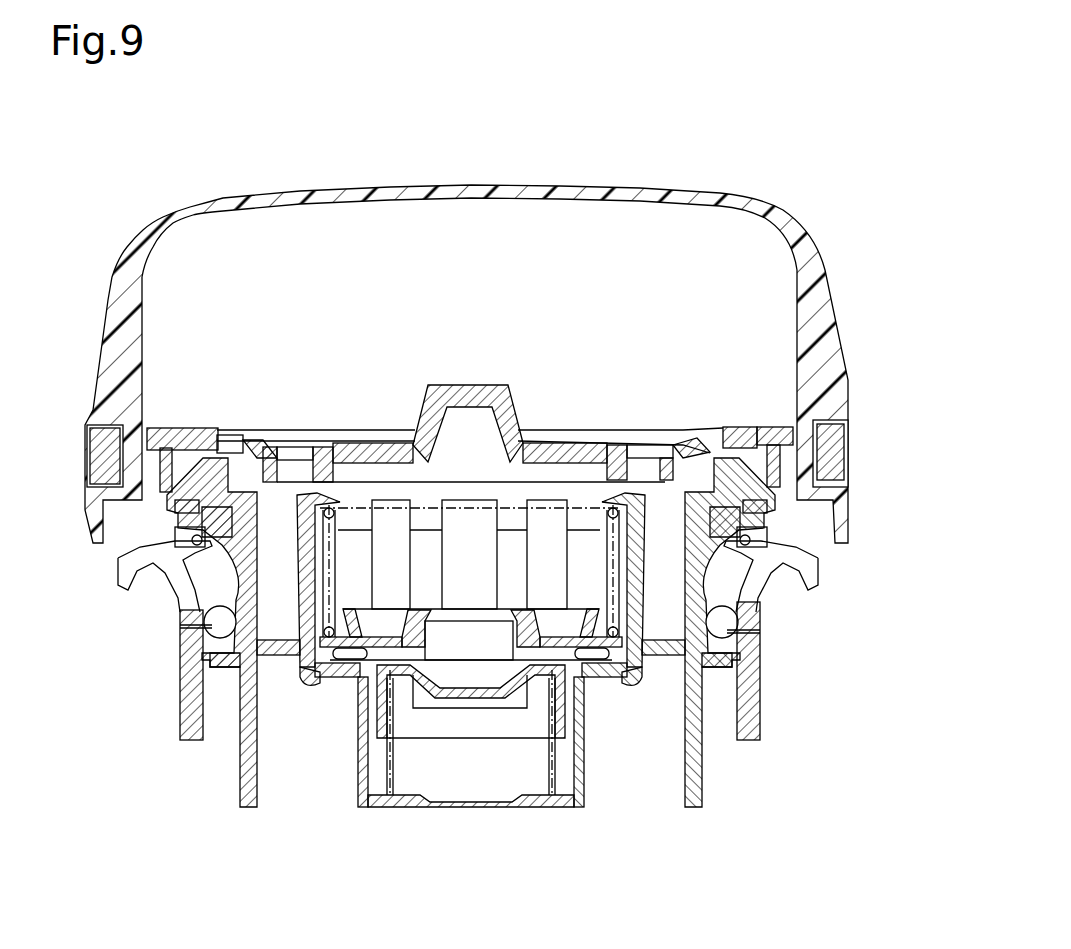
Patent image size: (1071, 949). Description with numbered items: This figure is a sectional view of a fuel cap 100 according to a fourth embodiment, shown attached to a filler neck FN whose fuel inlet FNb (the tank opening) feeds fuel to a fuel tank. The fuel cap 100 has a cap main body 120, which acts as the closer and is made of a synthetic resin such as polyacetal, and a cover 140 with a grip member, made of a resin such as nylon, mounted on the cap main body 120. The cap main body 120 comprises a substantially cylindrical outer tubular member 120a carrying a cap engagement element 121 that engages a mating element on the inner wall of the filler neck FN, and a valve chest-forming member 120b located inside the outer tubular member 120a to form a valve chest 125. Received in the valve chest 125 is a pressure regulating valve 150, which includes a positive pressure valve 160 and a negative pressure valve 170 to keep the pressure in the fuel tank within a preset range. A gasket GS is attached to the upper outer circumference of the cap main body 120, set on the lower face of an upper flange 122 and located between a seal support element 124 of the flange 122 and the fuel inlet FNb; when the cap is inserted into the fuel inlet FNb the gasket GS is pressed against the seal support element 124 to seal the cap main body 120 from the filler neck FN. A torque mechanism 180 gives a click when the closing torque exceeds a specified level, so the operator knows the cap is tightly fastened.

The cap assembly 100 is at (805, 134).
The cover 140 is at (783, 212).
The torque mechanism 180 is at (682, 432).
The upper flange 122 is at (745, 500).
The seal support element 124 is at (740, 528).
The gasket GS is at (760, 540).
The fuel inlet FNb is at (720, 583).
The filler neck FN is at (752, 668).
The cap engagement element 121 is at (240, 660).
The outer tubular member 120a is at (247, 733).
The valve chest-forming member 120b is at (356, 755).
The cap main body 120 is at (471, 689).
The valve chest 125 is at (567, 762).
The negative pressure valve 170 is at (568, 722).
The positive pressure valve 160 is at (637, 673).
The pressure regulating valve 150 is at (506, 702).